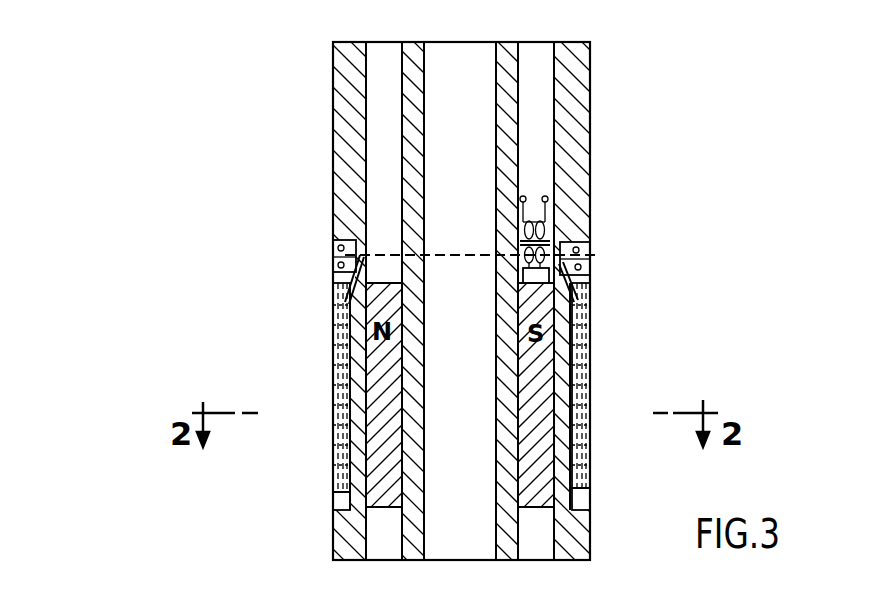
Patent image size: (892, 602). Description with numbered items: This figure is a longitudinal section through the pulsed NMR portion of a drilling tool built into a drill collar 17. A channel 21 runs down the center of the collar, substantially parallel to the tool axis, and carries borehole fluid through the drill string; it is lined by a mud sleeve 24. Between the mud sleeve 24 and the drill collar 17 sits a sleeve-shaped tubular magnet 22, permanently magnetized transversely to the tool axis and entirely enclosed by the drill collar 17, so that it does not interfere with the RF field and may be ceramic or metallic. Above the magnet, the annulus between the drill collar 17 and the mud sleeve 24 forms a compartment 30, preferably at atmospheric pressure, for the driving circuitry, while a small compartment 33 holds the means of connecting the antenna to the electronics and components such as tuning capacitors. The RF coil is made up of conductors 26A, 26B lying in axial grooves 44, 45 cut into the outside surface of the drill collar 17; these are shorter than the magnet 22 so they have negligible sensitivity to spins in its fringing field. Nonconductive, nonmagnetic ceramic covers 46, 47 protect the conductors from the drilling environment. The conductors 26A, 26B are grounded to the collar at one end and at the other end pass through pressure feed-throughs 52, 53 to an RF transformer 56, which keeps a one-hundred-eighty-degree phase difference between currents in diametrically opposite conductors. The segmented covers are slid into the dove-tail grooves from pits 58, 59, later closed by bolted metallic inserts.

The drill collar 17 is at (350, 203).
The channel 21 is at (476, 89).
The tubular magnet 22 is at (385, 468).
The mud sleeve 24 is at (415, 138).
The RF conductor 26A is at (337, 372).
The RF conductor 26B is at (585, 305).
The compartment 30 is at (383, 163).
The small compartment 33 is at (338, 250).
The axial groove 44 is at (570, 385).
The axial groove 45 is at (347, 315).
The nonmagnetic cover 46 is at (590, 345).
The nonmagnetic cover 47 is at (335, 408).
The pressure feed-through 52 is at (582, 290).
The pressure feed-through 53 is at (350, 283).
The RF transformer 56 is at (550, 215).
The pit 58 is at (580, 505).
The pit 59 is at (345, 505).